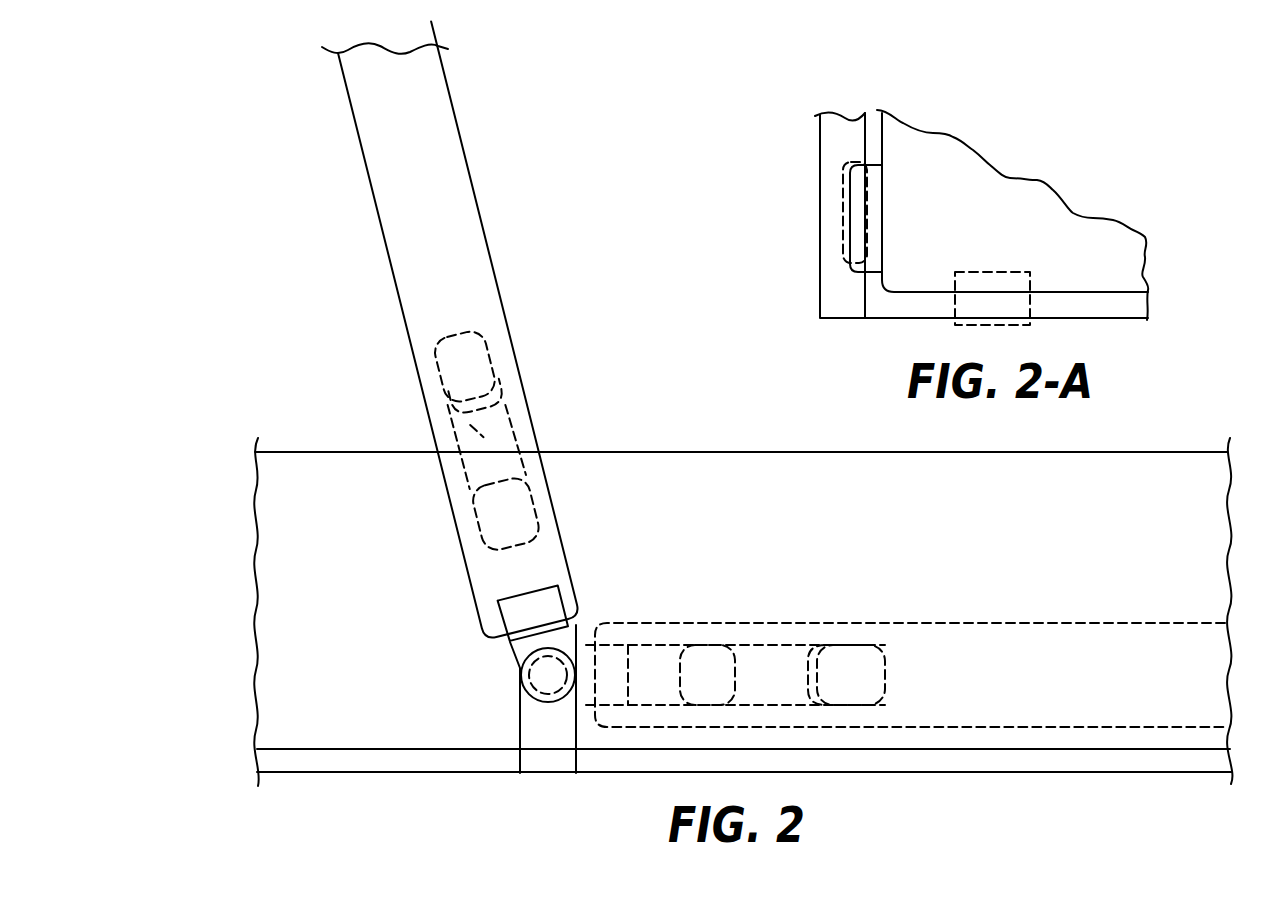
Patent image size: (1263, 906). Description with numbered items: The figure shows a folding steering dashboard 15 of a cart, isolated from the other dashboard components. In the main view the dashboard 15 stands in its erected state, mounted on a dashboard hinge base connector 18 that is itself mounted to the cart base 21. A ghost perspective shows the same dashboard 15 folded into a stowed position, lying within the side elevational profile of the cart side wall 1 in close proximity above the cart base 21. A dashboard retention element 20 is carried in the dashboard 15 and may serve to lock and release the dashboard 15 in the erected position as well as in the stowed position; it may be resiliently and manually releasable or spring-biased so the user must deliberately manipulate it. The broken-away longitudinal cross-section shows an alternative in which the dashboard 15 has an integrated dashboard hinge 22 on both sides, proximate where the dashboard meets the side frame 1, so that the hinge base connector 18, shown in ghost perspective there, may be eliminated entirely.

In FIG. 2, the cart side wall 1 is at (348, 514).
In FIG. 2-A, the cart side wall 1 is at (833, 142).
In FIG. 2, the dashboard 15 is at (383, 157).
In FIG. 2-A, the dashboard 15 is at (950, 226).
In FIG. 2, the dashboard hinge base connector 18 is at (521, 675).
In FIG. 2-A, the dashboard hinge base connector 18 is at (1013, 308).
In FIG. 2, the dashboard retention element 20 is at (446, 426).
In FIG. 2, the cart base 21 is at (409, 759).
In FIG. 2-A, the integrated dashboard hinge 22 is at (860, 225).